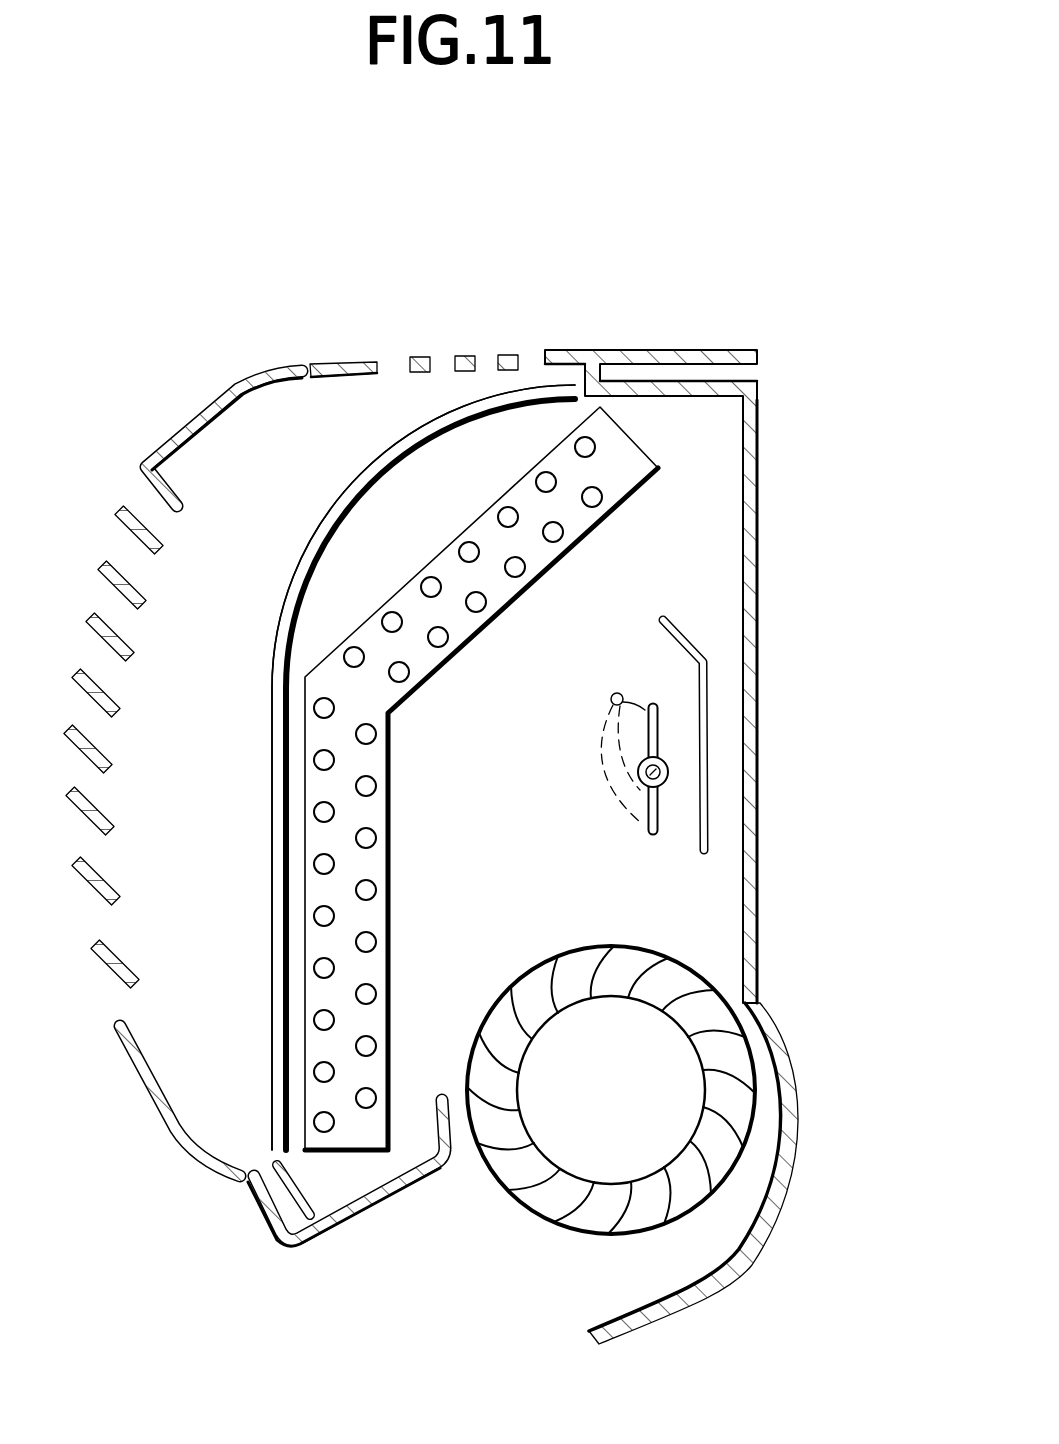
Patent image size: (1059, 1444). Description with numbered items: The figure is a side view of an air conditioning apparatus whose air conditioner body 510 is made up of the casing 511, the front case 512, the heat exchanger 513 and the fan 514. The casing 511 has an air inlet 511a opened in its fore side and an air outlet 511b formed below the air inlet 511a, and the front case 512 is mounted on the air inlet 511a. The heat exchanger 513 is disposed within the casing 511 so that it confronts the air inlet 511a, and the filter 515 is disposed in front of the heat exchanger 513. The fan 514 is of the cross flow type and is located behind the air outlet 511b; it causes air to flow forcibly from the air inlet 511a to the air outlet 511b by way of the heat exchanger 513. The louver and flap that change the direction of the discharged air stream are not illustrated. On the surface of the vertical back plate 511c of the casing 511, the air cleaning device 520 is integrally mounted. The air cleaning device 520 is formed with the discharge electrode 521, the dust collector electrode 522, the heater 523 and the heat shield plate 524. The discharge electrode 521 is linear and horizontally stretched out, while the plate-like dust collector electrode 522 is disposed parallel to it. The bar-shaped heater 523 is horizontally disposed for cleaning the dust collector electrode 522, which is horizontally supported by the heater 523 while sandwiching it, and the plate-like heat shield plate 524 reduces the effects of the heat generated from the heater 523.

The air conditioner body 510 is at (390, 342).
The casing 511 is at (668, 350).
The air inlet 511a is at (296, 742).
The air outlet 511b is at (497, 1222).
The back plate 511c is at (760, 565).
The front case 512 is at (170, 432).
The heat exchanger 513 is at (326, 940).
The fan 514 is at (737, 1128).
The filter 515 is at (312, 530).
The air cleaning device 520 is at (713, 743).
The discharge electrode 521 is at (613, 693).
The dust collector electrode 522 is at (668, 790).
The heater 523 is at (665, 770).
The heat shield plate 524 is at (708, 670).